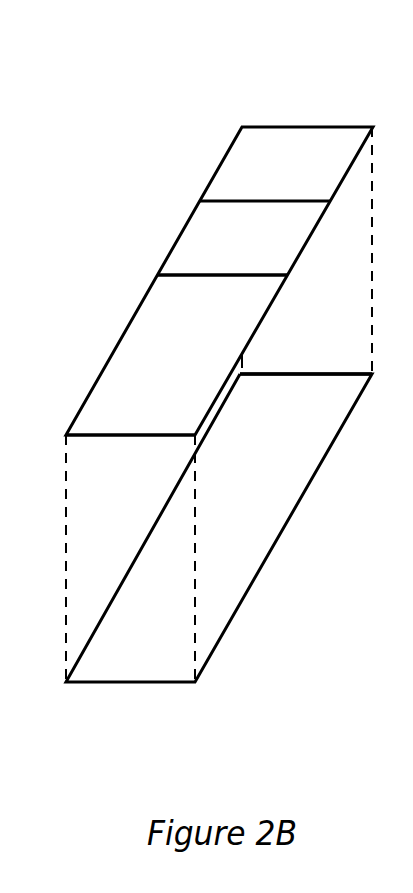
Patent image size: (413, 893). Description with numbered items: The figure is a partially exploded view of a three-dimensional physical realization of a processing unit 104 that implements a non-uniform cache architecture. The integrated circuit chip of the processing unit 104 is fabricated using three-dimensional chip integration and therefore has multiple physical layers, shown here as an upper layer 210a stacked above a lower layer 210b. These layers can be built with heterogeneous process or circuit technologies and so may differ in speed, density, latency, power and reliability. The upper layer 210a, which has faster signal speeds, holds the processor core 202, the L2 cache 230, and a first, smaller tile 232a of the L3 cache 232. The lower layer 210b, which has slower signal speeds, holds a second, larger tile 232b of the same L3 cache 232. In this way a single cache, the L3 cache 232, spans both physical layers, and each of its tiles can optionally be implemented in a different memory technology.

The processing unit 104 is at (308, 102).
The processor core 202 is at (325, 191).
The L2 cache 230 is at (258, 266).
The L3 cache 232 is at (211, 330).
The first tile of L3 cache 232a is at (192, 390).
The second tile of L3 cache 232b is at (273, 496).
The upper layer 210a is at (160, 263).
The lower layer 210b is at (243, 600).